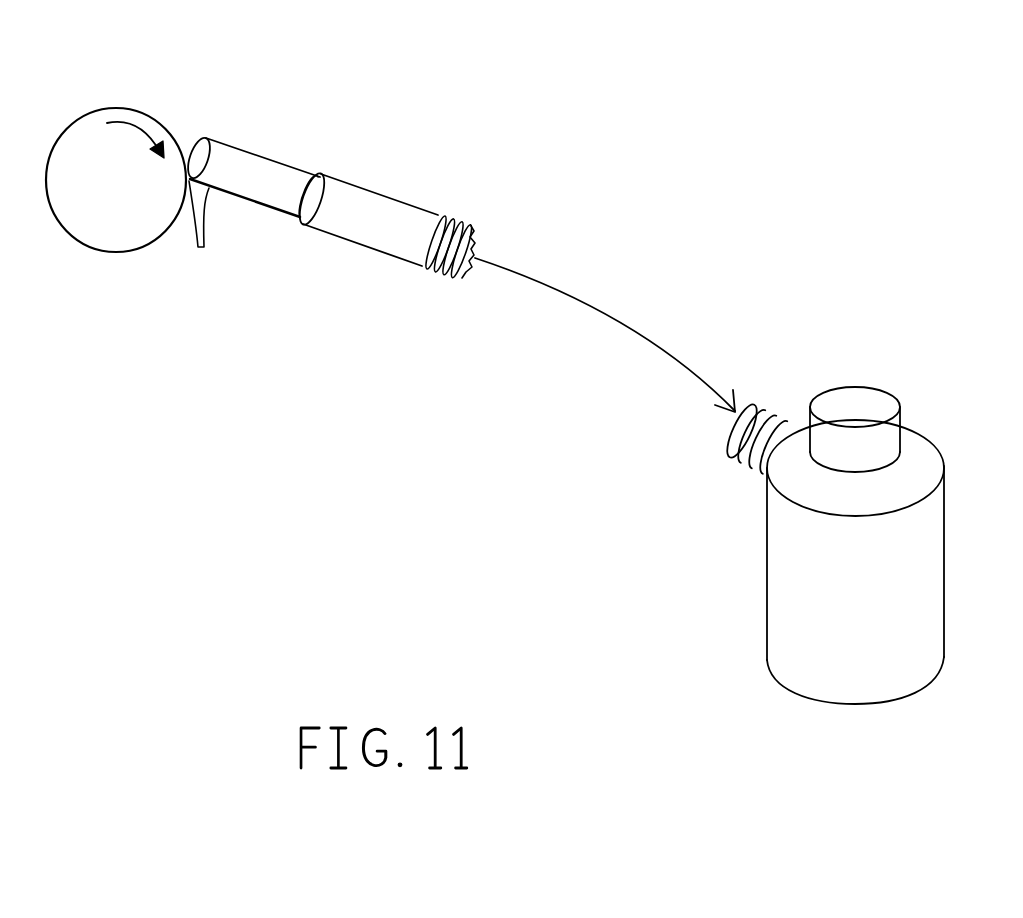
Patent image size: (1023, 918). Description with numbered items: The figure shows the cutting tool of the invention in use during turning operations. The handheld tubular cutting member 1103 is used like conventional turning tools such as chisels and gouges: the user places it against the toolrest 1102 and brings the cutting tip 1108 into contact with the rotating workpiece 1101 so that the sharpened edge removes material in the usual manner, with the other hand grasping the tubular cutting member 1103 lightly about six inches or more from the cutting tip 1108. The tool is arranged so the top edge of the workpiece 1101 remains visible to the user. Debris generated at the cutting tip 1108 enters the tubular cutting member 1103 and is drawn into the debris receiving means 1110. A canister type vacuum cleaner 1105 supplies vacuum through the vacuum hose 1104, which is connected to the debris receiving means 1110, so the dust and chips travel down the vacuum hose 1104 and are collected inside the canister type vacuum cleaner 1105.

The rotating workpiece 1101 is at (88, 132).
The toolrest 1102 is at (201, 227).
The tubular cutting member 1103 is at (280, 170).
The vacuum hose 1104 is at (727, 441).
The canister type vacuum cleaner 1105 is at (881, 507).
The cutting tip 1108 is at (206, 138).
The debris receiving means 1110 is at (352, 228).